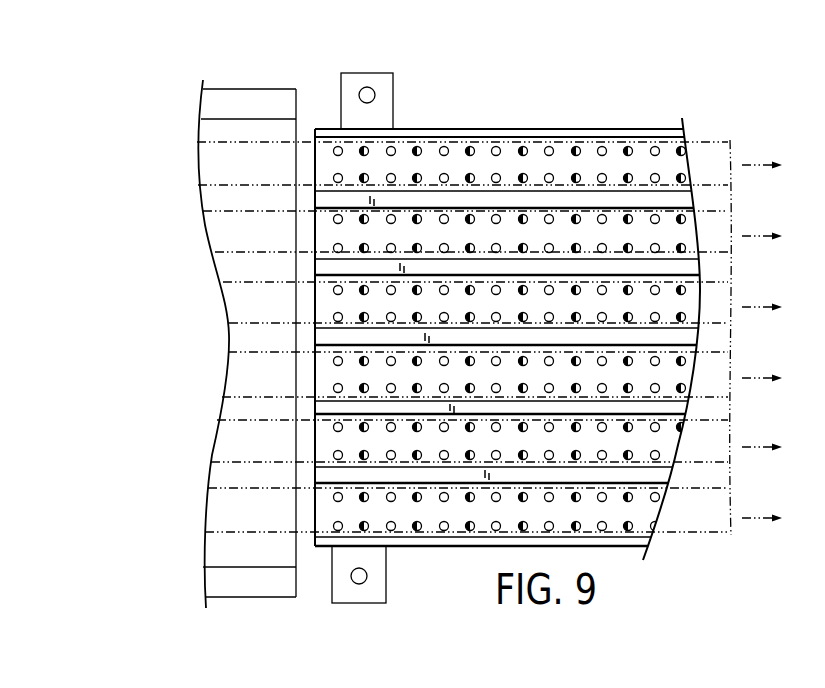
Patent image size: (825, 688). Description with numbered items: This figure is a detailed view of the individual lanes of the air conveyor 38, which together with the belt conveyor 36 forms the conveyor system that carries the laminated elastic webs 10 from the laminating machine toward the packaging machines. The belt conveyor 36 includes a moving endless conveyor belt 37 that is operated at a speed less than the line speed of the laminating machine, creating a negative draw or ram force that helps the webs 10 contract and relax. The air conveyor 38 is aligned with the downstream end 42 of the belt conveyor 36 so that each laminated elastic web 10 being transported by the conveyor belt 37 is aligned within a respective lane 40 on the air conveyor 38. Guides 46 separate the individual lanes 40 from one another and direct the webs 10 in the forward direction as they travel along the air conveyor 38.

The laminated elastic web 10 is at (230, 515).
The belt conveyor 36 is at (208, 341).
The conveyor belt 37 is at (215, 550).
The air conveyor 38 is at (422, 119).
The lane 40 is at (620, 163).
The downstream end 42 is at (302, 101).
The guide 46 is at (515, 197).